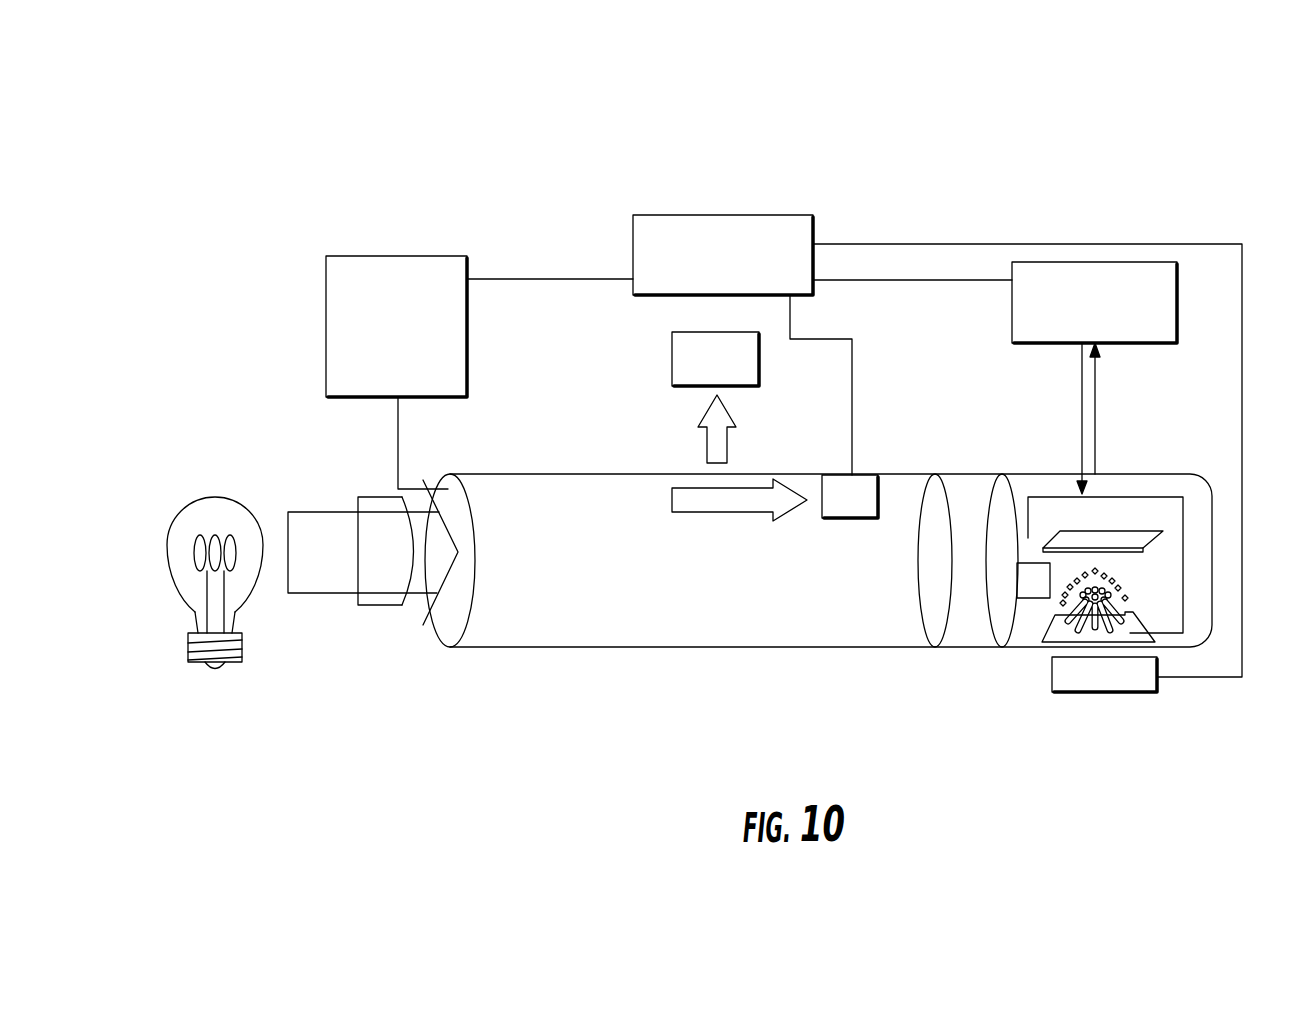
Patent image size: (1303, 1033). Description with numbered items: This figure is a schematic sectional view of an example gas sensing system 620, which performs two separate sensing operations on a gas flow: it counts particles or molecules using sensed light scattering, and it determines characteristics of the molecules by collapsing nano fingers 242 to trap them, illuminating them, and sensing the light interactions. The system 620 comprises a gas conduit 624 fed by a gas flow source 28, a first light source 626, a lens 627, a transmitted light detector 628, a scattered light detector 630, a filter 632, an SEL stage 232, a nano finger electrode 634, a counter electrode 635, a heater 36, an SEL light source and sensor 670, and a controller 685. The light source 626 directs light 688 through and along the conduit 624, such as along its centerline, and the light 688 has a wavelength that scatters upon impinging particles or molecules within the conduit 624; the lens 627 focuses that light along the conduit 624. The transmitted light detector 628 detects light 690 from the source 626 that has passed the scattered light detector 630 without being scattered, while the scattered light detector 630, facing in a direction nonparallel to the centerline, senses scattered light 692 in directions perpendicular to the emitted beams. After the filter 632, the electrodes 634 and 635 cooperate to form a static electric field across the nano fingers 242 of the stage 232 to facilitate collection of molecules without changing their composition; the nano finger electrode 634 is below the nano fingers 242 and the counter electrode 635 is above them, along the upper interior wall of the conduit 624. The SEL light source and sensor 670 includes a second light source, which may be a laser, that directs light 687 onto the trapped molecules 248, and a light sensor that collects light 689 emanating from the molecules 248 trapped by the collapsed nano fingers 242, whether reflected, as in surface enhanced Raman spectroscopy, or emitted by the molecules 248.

The gas sensing system 620 is at (484, 134).
The gas flow source 28 is at (325, 313).
The controller 685 is at (738, 215).
The SEL light source and sensor 670 is at (1130, 262).
The scattered light detector 630 is at (672, 365).
The scattered light 692 is at (705, 447).
The transmitted light 690 is at (757, 482).
The transmitted light detector 628 is at (865, 475).
The light from second light source 687 is at (1080, 421).
The light emanating from trapped molecules 689 is at (1097, 427).
The first light source 626 is at (178, 515).
The light 688 is at (323, 595).
The lens 627 is at (385, 605).
The gas conduit 624 is at (793, 648).
The filter 632 is at (968, 648).
The nano finger electrode 634 is at (1052, 635).
The counter electrode 635 is at (1148, 540).
The molecules 248 is at (1127, 598).
The SEL stage 232 is at (1123, 615).
The nano fingers 242 is at (1118, 630).
The heater 36 is at (1118, 690).